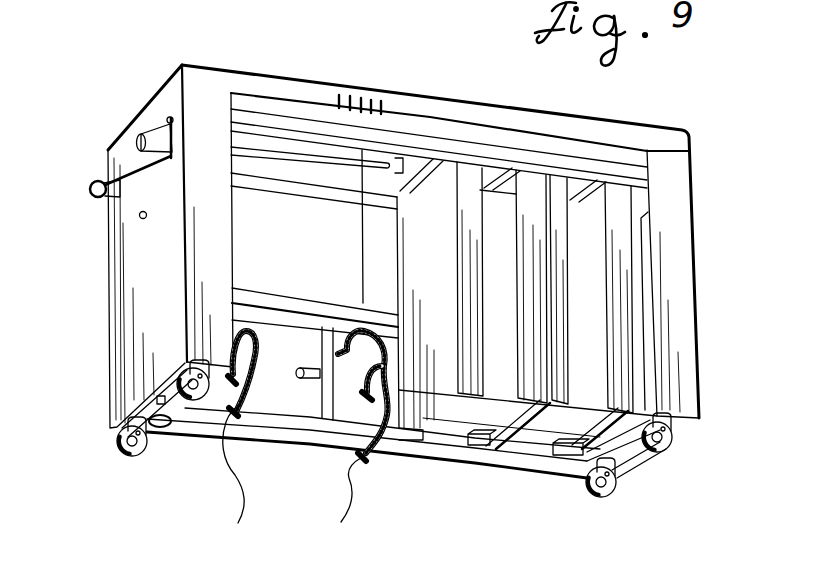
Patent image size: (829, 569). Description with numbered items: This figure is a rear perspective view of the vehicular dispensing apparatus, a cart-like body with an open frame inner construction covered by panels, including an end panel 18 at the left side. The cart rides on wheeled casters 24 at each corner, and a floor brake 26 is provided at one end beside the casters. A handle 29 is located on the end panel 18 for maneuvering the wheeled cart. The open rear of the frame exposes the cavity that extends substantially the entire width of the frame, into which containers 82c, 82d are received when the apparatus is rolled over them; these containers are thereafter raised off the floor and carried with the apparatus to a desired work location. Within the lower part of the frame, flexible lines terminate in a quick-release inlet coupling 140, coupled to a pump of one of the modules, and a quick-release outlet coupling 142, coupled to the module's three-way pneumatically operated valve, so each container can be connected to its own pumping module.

The end panel 18 is at (118, 218).
The wheeled caster 24 is at (182, 386).
The floor brake 26 is at (137, 420).
The handle 29 is at (148, 136).
The container 82c is at (448, 420).
The container 82d is at (540, 432).
The quick-release inlet coupling 140 is at (278, 471).
The quick-release outlet coupling 142 is at (226, 384).